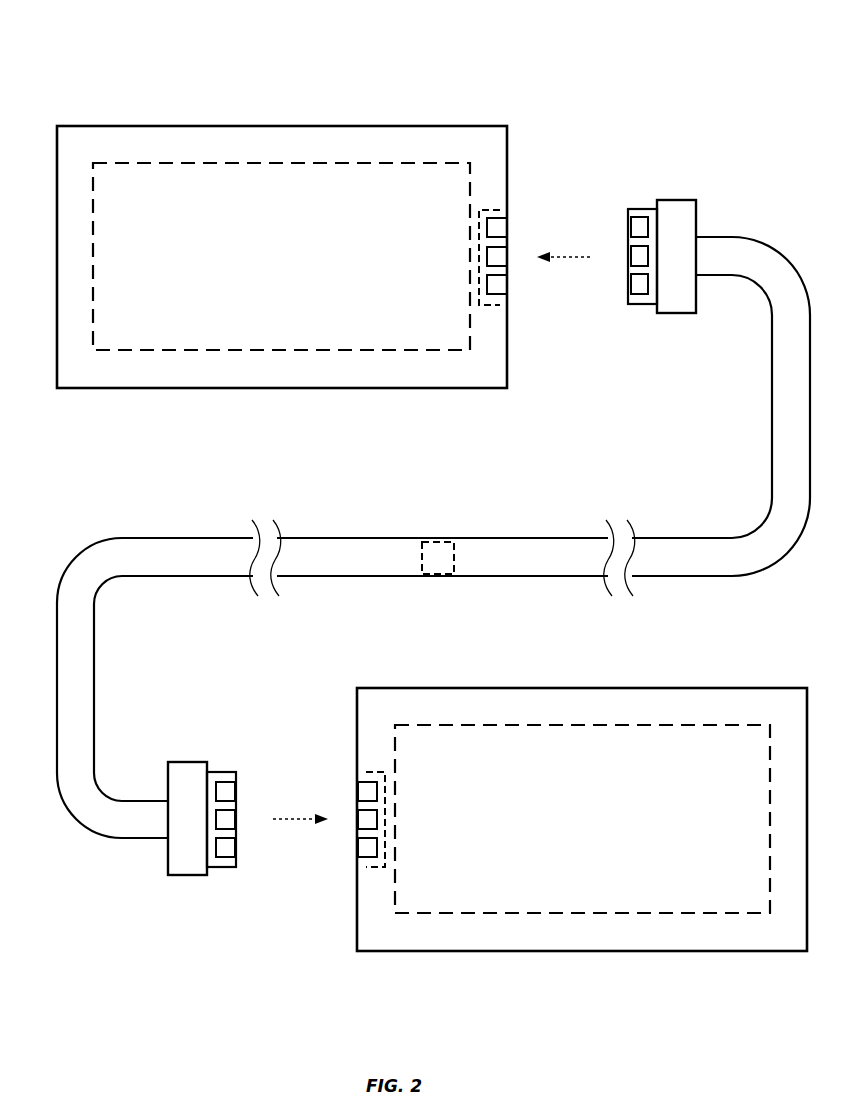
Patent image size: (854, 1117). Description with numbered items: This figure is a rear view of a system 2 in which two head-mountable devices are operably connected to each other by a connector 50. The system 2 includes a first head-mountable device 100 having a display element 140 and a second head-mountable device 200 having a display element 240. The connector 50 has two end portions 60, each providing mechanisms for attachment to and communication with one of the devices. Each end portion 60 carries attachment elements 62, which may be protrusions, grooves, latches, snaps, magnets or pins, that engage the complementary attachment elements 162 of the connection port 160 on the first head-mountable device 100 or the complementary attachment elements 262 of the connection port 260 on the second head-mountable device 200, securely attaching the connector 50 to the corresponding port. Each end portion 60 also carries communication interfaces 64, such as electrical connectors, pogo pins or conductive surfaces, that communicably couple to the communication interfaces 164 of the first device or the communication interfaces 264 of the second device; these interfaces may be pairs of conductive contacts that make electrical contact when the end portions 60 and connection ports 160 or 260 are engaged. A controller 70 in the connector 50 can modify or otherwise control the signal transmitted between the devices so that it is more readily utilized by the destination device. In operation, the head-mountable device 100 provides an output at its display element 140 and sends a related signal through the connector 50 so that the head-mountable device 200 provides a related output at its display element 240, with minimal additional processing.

The system 2 is at (364, 92).
The head-mountable device 100 is at (32, 122).
The display element 140 is at (241, 162).
The connection port 160 is at (485, 208).
The attachment elements 162 is at (498, 227).
The communication interfaces 164 is at (498, 258).
The end portions 60 is at (670, 199).
The attachment elements 62 is at (638, 228).
The communication interfaces 64 is at (636, 258).
The connector 50 is at (732, 236).
The controller 70 is at (441, 551).
The head-mountable device 200 is at (333, 688).
The display element 240 is at (557, 724).
The connection port 260 is at (375, 770).
The attachment elements 262 is at (366, 788).
The communication interfaces 264 is at (366, 820).